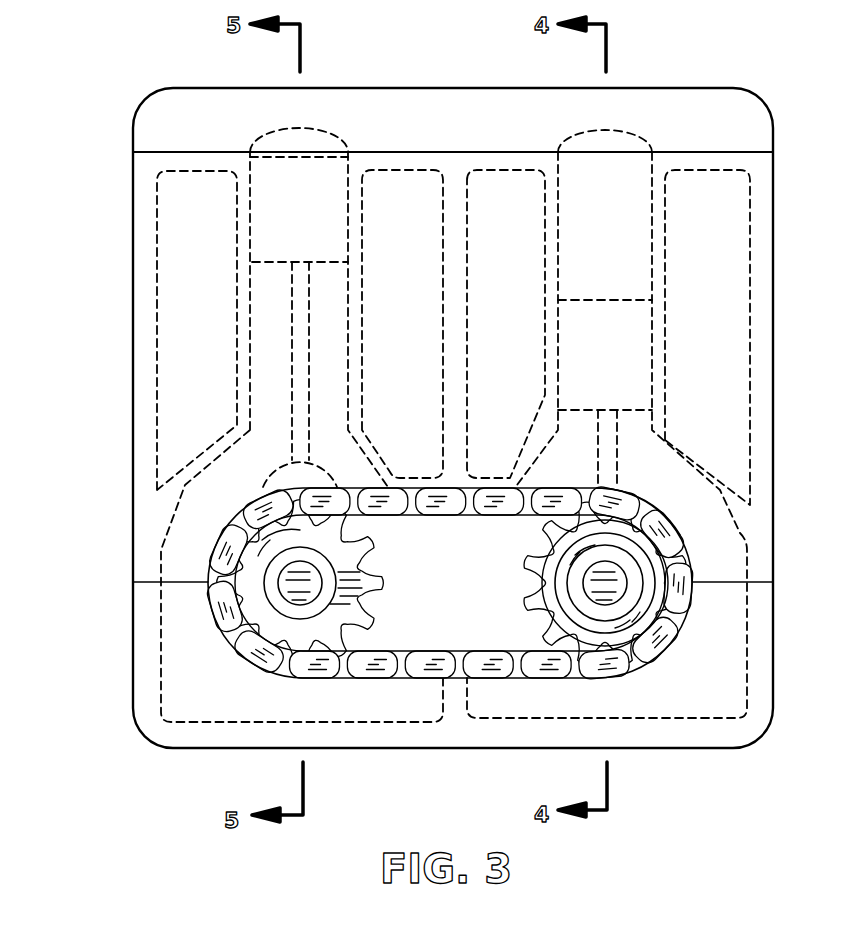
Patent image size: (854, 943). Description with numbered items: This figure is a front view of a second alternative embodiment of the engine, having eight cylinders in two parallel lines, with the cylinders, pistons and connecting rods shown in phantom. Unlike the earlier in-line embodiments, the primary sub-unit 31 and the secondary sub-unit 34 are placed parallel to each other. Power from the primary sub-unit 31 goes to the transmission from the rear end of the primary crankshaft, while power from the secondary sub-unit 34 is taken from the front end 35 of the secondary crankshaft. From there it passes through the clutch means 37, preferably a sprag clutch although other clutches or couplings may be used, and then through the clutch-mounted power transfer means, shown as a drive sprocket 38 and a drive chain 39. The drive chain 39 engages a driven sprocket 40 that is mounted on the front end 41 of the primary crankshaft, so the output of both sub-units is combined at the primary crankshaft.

The primary sub-unit 31 is at (210, 513).
The secondary sub-unit 34 is at (620, 513).
The front end of secondary crankshaft 35 is at (605, 583).
The clutch means 37 is at (647, 583).
The drive sprocket 38 is at (522, 592).
The drive chain 39 is at (488, 668).
The driven sprocket 40 is at (375, 595).
The front end of primary crankshaft 41 is at (302, 583).